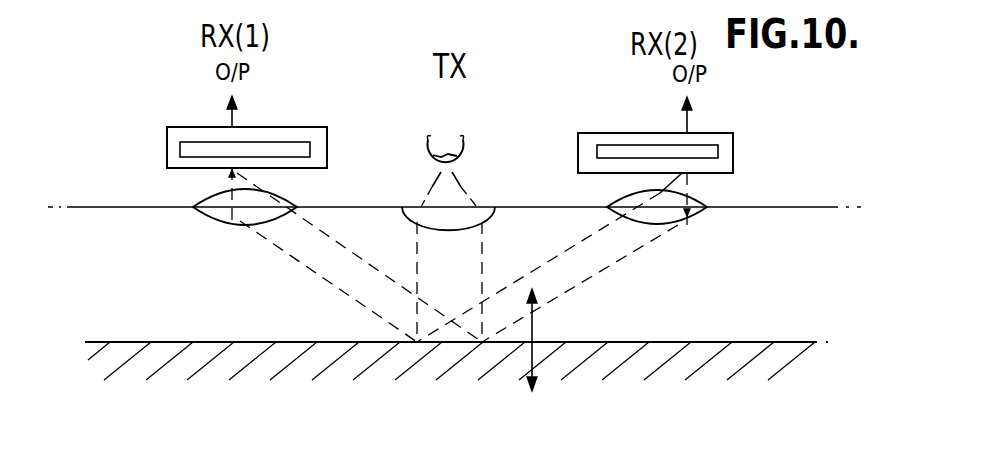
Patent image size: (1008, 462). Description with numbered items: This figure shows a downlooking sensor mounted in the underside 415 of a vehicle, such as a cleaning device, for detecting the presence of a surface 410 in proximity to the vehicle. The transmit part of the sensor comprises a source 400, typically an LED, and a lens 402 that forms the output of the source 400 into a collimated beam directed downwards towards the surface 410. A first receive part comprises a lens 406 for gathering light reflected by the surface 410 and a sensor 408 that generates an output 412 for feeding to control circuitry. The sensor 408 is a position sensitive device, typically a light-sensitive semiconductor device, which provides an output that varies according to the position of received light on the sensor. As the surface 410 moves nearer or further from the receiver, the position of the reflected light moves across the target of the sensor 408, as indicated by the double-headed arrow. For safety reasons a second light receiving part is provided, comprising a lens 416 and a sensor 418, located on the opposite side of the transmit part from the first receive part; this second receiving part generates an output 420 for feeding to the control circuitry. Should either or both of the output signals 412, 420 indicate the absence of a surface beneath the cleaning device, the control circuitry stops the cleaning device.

The source 400 is at (418, 152).
The lens 402 is at (465, 215).
The lens 406 is at (218, 218).
The sensor 408 is at (167, 153).
The surface 410 is at (227, 341).
The output 412 is at (230, 118).
The underside of the vehicle 415 is at (128, 206).
The lens of second light receiving part 416 is at (698, 203).
The sensor of second light receiving part 418 is at (733, 153).
The output signal 420 is at (690, 128).